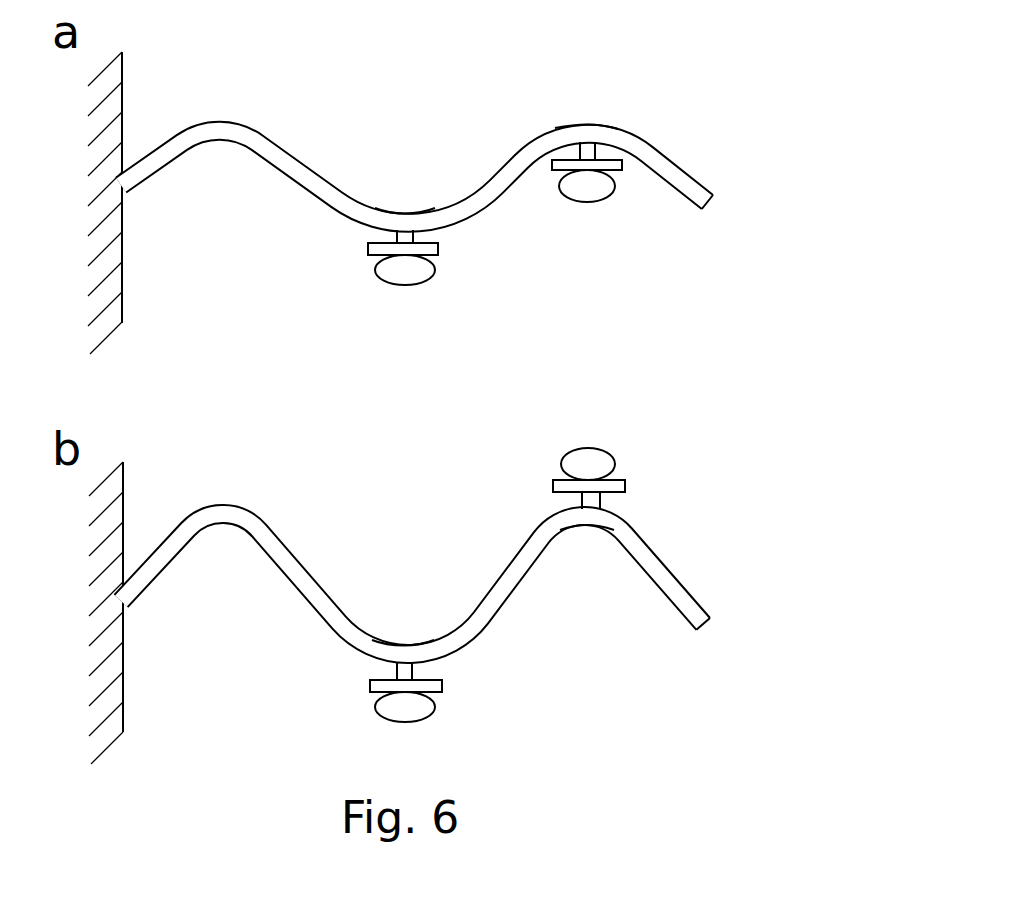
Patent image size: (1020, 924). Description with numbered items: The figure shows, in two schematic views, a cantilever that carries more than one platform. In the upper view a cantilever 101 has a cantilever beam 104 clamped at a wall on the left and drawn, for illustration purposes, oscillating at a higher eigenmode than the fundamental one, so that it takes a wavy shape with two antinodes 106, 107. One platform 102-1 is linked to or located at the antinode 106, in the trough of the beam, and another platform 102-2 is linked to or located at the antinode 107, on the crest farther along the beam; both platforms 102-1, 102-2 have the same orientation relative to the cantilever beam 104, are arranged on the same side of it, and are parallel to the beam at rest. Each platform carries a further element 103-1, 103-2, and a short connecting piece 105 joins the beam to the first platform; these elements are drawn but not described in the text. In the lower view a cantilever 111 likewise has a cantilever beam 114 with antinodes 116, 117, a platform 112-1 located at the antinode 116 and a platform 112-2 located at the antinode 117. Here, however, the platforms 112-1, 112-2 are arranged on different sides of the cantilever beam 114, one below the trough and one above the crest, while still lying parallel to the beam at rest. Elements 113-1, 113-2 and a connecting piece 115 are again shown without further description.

The cantilever 101 is at (475, 186).
The platform 102-1 is at (460, 247).
The platform 102-2 is at (605, 148).
The first contact body 103-1 is at (447, 278).
The second contact body 103-2 is at (541, 170).
The cantilever beam 104 is at (296, 150).
The first connecting stem 105 is at (393, 232).
The antinode 106 is at (402, 212).
The antinode 107 is at (586, 124).
The cantilever 111 is at (476, 569).
The platform 112-1 is at (460, 685).
The platform 112-2 is at (647, 484).
The first contact body 113-1 is at (450, 714).
The second contact body 113-2 is at (567, 441).
The cantilever beam 114 is at (293, 545).
The first connecting stem 115 is at (393, 668).
The antinode 116 is at (402, 645).
The antinode 117 is at (590, 526).